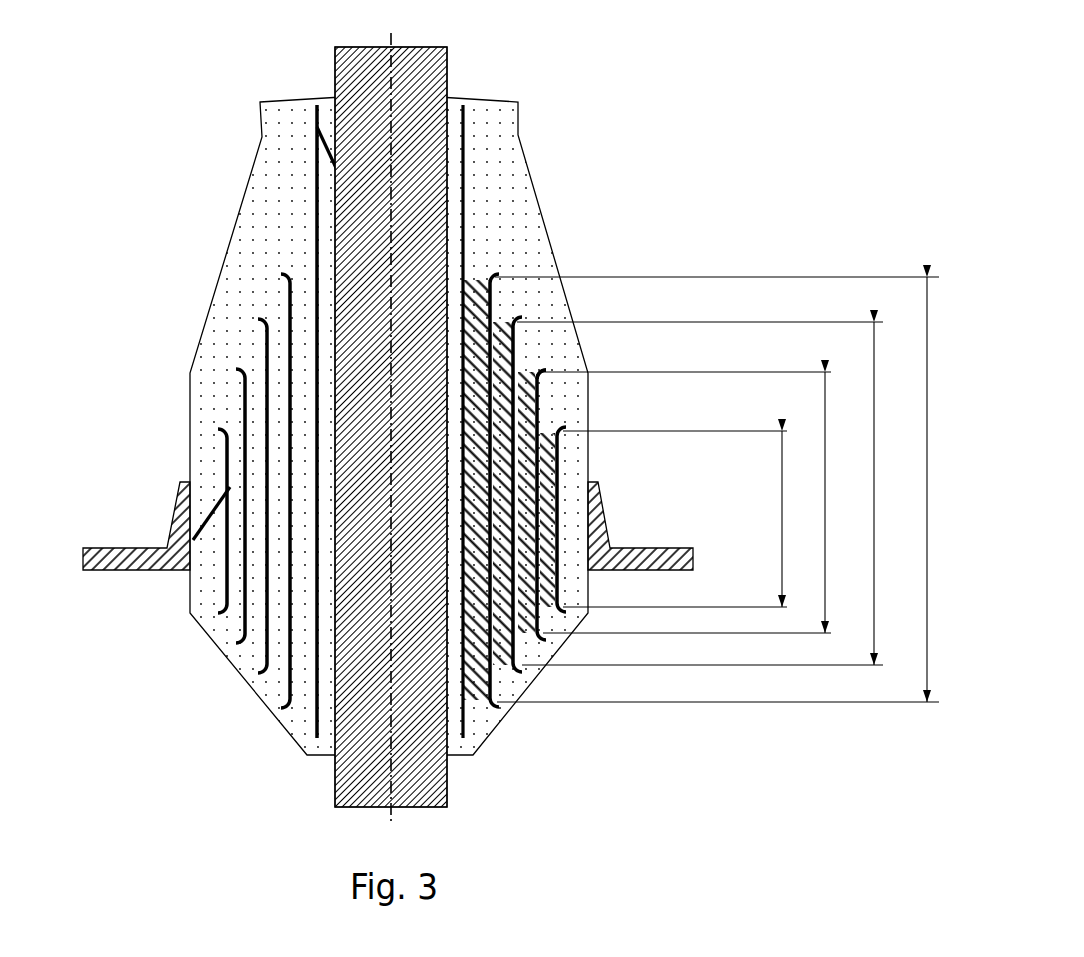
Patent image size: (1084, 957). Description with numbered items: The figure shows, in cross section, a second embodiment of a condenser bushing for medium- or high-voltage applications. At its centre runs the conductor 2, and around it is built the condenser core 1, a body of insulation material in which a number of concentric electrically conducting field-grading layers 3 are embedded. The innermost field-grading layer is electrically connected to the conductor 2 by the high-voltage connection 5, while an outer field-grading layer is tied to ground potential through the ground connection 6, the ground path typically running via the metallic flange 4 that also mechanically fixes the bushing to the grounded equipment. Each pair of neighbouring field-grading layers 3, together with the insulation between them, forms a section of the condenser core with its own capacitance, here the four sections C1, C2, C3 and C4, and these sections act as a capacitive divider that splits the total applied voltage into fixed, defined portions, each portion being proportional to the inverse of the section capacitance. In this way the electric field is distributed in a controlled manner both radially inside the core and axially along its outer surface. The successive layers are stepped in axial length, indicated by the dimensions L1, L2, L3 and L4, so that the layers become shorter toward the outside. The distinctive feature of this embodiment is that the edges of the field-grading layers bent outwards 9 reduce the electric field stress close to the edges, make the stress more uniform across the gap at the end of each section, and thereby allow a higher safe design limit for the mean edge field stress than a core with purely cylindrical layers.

The condenser core 1 is at (428, 424).
The conductor 2 is at (452, 429).
The field-grading layers 3 is at (570, 421).
The flange 4 is at (640, 518).
The high-voltage connection 5 is at (214, 421).
The ground connection 6 is at (144, 444).
The edges of field-grading layers bent outwards 9 is at (635, 311).
The section capacitance C1 is at (514, 543).
The section capacitance C2 is at (559, 540).
The section capacitance C3 is at (574, 535).
The section capacitance C4 is at (589, 546).
The length of first capacitive layer L1 is at (717, 489).
The length of second capacitive layer L2 is at (700, 493).
The length of third capacitive layer L3 is at (685, 502).
The length of fourth capacitive layer L4 is at (675, 519).